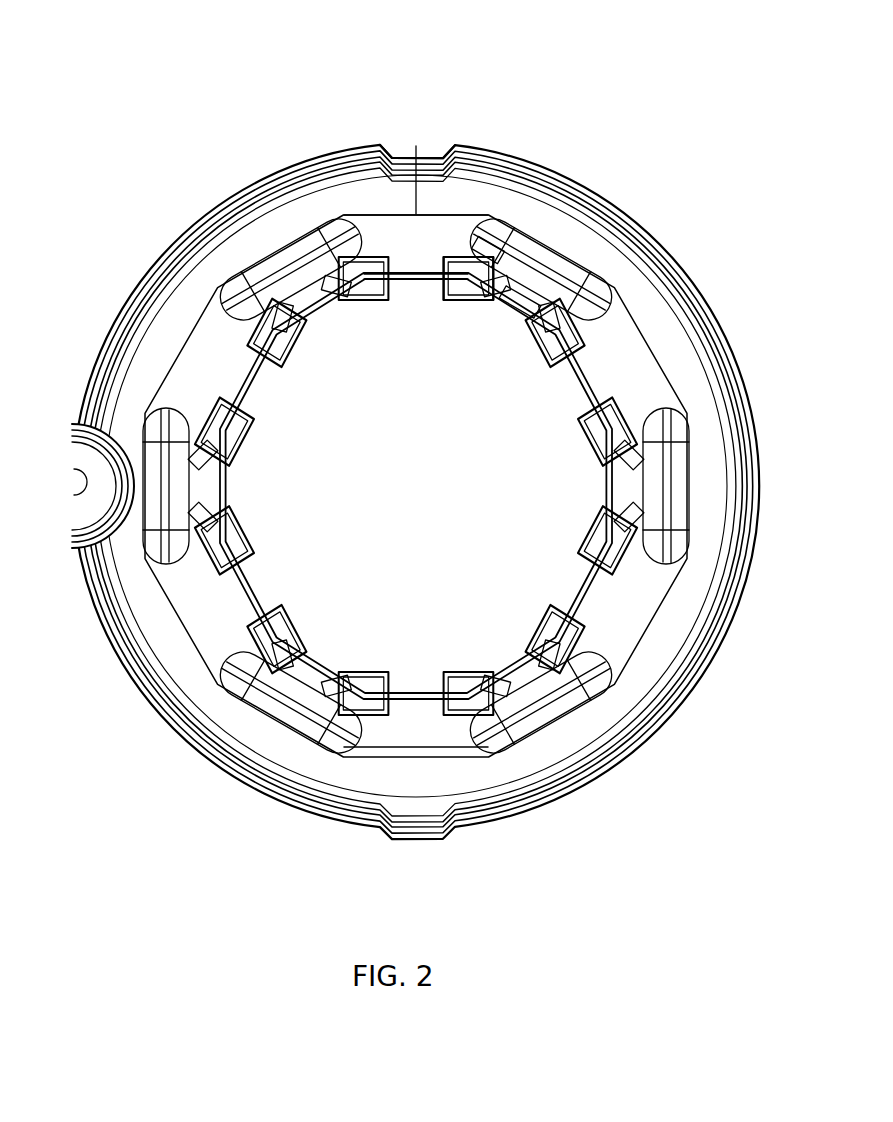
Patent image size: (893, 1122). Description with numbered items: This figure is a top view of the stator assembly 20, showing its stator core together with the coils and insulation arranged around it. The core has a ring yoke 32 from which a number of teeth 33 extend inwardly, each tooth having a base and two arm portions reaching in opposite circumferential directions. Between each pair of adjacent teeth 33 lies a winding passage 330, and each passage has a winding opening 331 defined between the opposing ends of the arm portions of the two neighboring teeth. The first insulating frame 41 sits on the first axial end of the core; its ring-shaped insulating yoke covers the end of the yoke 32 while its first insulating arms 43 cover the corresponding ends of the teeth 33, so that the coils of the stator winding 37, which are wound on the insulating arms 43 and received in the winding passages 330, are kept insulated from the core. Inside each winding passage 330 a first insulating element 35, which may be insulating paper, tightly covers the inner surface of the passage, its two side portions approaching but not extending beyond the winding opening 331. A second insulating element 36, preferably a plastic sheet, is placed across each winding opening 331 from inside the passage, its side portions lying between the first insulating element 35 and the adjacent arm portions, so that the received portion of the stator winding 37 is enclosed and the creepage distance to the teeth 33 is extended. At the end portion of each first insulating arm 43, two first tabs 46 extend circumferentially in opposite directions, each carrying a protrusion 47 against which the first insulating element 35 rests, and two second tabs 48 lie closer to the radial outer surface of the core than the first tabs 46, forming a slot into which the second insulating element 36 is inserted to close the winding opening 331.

The stator assembly 20 is at (276, 156).
The ring yoke 32 is at (216, 768).
The teeth 33 is at (332, 650).
The first insulating element 35 is at (430, 148).
The second insulating element 36 is at (414, 280).
The stator winding 37 is at (540, 268).
The first insulating frame 41 is at (193, 298).
The first insulating arms 43 is at (313, 322).
The first tabs 46 is at (462, 308).
The protrusion 47 is at (497, 262).
The second tabs 48 is at (456, 266).
The winding passage 330 is at (387, 233).
The winding opening 331 is at (402, 284).